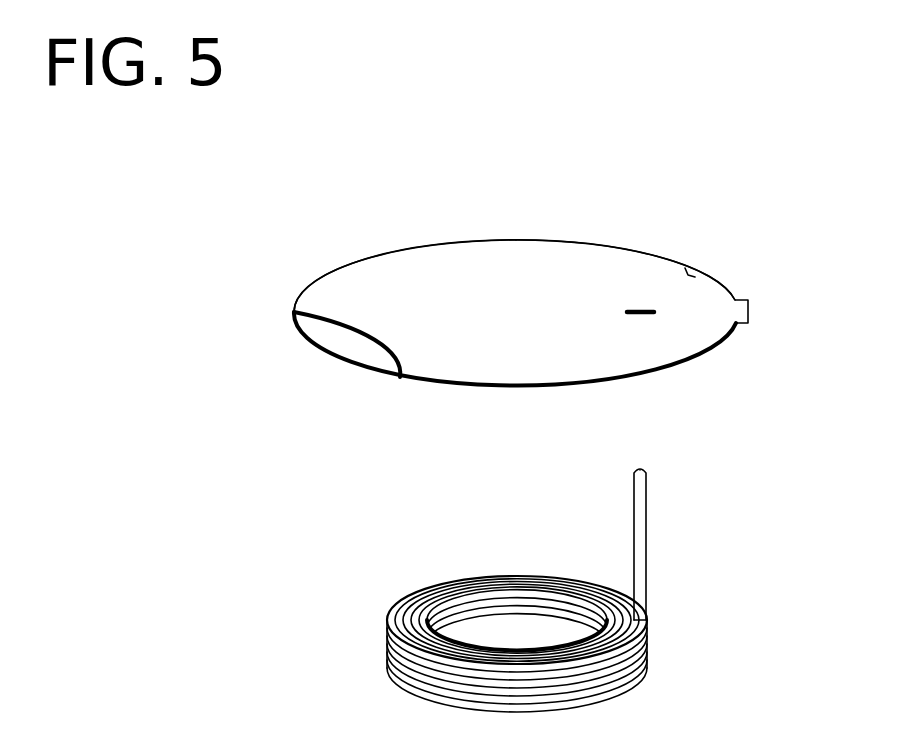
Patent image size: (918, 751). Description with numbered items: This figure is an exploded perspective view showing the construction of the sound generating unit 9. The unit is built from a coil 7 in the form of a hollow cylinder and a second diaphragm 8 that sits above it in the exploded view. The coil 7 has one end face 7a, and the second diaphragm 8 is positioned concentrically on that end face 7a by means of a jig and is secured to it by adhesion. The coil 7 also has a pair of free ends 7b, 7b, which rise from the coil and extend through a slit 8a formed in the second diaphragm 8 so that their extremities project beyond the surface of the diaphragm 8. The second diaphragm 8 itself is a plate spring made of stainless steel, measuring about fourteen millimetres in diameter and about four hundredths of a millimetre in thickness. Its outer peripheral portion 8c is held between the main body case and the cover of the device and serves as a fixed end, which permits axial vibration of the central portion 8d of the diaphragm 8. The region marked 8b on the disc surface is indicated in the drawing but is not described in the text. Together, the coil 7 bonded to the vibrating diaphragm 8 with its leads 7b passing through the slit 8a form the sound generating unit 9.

The coil 7 is at (644, 660).
The end face 7a is at (466, 563).
The free ends 7b is at (633, 487).
The second diaphragm 8 is at (280, 215).
The slit 8a is at (652, 310).
The disc surface 8b is at (581, 278).
The outer peripheral portion 8c is at (294, 314).
The central portion 8d is at (492, 305).
The sound generating unit 9 is at (782, 423).